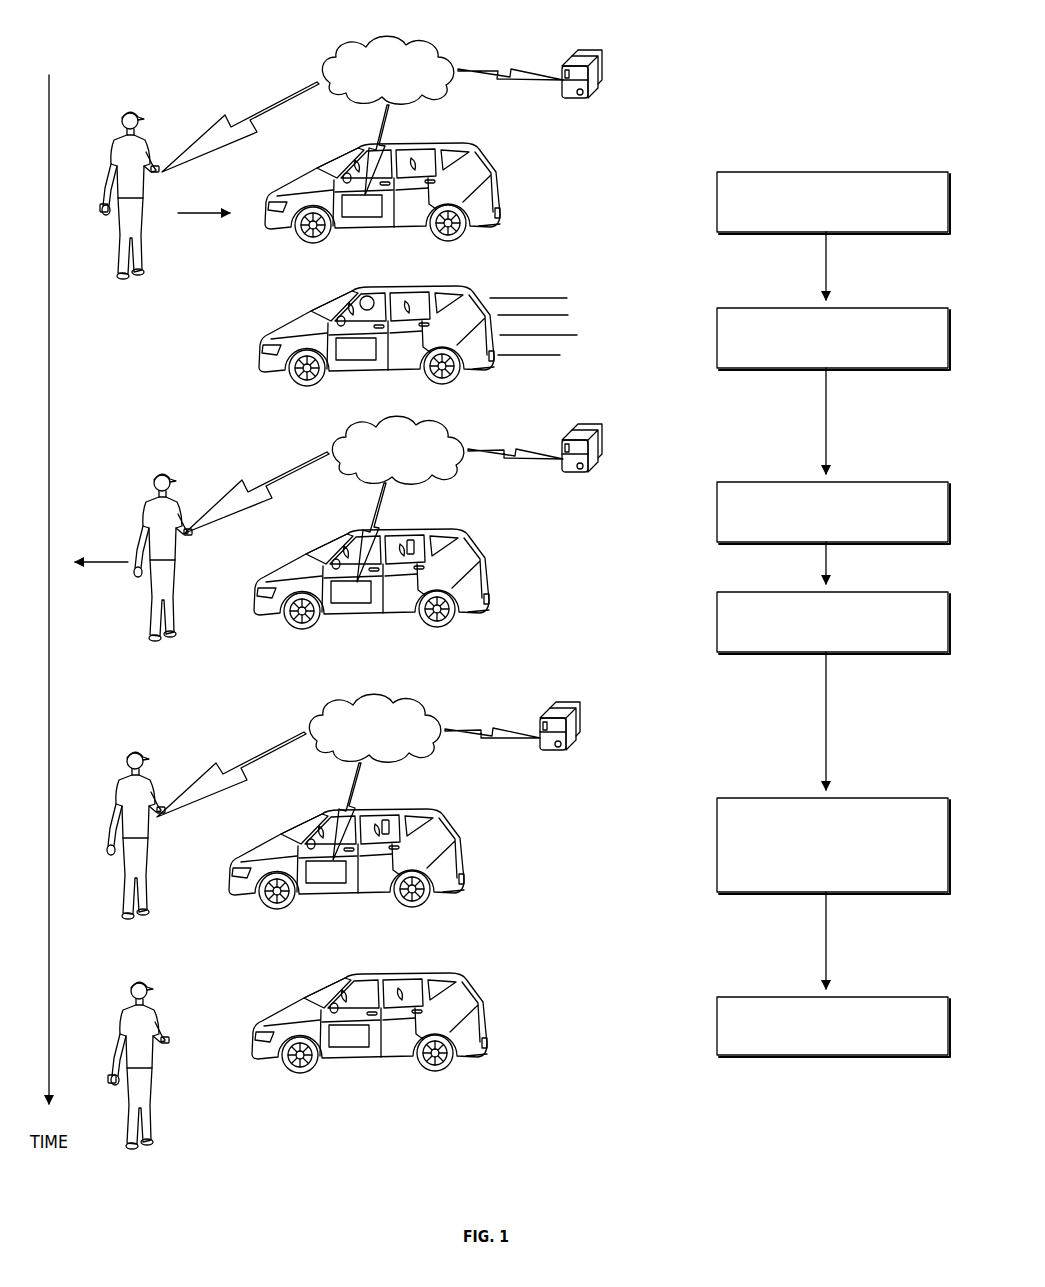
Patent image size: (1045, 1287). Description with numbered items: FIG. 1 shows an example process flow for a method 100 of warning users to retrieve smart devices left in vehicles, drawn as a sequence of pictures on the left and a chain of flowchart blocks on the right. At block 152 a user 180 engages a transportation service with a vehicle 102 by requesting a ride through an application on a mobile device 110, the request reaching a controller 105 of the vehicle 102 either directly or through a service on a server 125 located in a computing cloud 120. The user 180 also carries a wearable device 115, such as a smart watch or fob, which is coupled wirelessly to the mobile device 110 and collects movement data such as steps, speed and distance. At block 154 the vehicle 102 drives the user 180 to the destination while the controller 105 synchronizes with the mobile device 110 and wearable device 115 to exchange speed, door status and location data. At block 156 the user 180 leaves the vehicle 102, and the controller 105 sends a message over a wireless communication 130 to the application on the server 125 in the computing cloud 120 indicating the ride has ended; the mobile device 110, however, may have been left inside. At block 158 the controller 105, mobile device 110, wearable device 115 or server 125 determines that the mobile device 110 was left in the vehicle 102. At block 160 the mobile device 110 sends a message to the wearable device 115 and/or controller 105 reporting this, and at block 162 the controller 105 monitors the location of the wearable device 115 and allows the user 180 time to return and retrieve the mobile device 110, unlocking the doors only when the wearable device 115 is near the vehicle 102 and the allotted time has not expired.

The method 100 is at (158, 49).
The vehicle 102 is at (456, 143).
The controller 105 is at (371, 212).
The mobile device 110 is at (102, 207).
The wearable device 115 is at (159, 167).
The computing cloud 120 is at (433, 40).
The server 125 is at (599, 58).
The wireless communication 130 is at (374, 128).
The user 180 is at (125, 136).
The block 152 is at (740, 172).
The block 154 is at (740, 308).
The block 156 is at (740, 482).
The block 158 is at (740, 592).
The block 160 is at (722, 798).
The block 162 is at (740, 997).